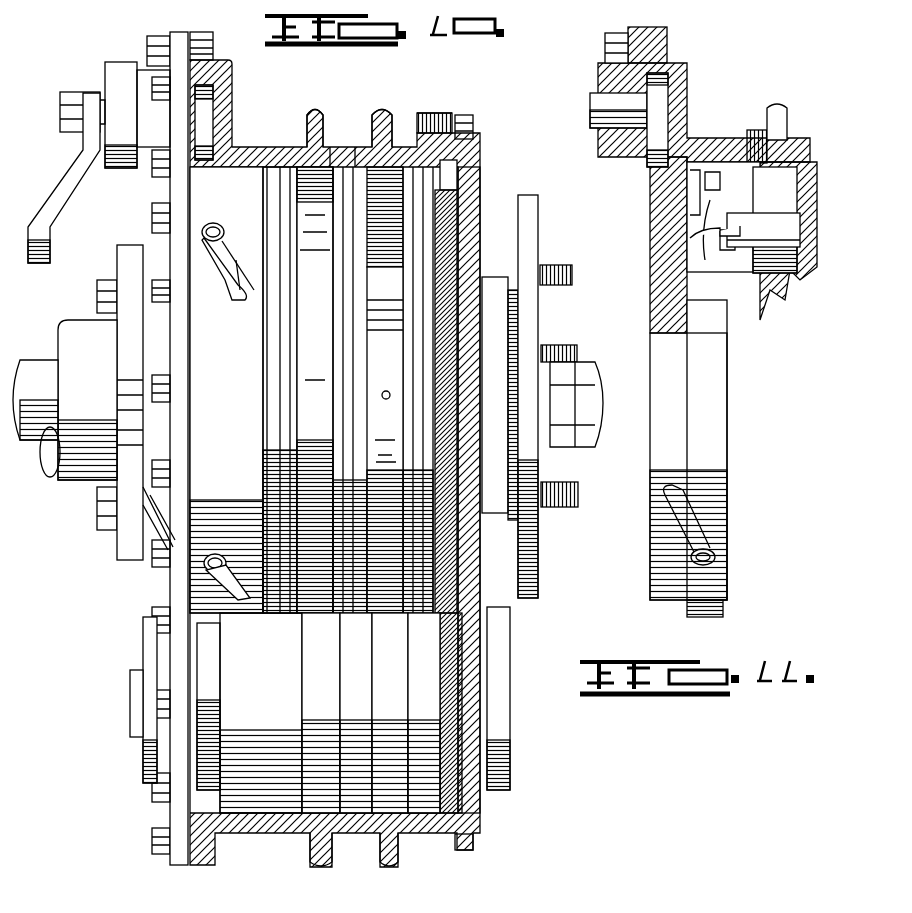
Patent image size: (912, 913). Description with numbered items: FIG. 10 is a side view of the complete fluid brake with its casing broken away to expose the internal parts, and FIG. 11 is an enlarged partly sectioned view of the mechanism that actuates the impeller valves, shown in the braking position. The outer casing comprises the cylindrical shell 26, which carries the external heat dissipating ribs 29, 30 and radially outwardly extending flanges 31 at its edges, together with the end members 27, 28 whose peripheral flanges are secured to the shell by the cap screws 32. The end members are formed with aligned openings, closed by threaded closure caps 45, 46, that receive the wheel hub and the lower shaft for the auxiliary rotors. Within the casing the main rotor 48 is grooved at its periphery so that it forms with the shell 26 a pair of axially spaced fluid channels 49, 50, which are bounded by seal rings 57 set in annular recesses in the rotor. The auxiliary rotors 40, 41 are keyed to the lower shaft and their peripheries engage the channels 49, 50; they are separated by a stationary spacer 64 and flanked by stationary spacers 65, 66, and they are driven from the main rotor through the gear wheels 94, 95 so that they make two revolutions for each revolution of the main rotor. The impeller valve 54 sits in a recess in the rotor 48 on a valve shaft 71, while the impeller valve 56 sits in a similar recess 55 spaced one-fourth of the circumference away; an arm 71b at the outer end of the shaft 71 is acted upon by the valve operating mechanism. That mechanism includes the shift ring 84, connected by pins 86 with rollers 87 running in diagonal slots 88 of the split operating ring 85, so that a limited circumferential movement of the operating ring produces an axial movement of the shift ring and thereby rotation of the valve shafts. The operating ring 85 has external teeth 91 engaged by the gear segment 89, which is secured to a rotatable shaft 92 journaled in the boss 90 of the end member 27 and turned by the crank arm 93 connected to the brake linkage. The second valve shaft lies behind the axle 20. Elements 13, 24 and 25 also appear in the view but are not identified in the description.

In FIG. 10, the hub flange 13 is at (78, 322).
In FIG. 10, the axle 20 is at (40, 362).
In FIG. 10, the pressure plate 24 is at (538, 236).
In FIG. 10, the bolt 25 is at (562, 286).
In FIG. 10, the cylindrical shell 26 is at (282, 150).
In FIG. 10, the end member 27 is at (170, 190).
In FIG. 10, the end member 28 is at (480, 178).
In FIG. 10, the heat dissipating rib 29 is at (316, 118).
In FIG. 10, the heat dissipating rib 30 is at (372, 118).
In FIG. 10, the flange 31 is at (203, 36).
In FIG. 10, the cap screw 32 is at (147, 48).
In FIG. 10, the auxiliary rotor 40 is at (320, 610).
In FIG. 10, the auxiliary rotor 41 is at (392, 610).
In FIG. 10, the closure cap 45 is at (498, 278).
In FIG. 10, the closure cap 46 is at (143, 652).
In FIG. 10, the main rotor 48 is at (345, 272).
In FIG. 10, the fluid channel 49 is at (336, 167).
In FIG. 11, the fluid channel 49 is at (787, 136).
In FIG. 10, the fluid channel 50 is at (382, 190).
In FIG. 10, the impeller valve 54 is at (312, 212).
In FIG. 11, the impeller valve 54 is at (800, 192).
In FIG. 10, the recess 55 is at (375, 310).
In FIG. 10, the impeller valve 56 is at (398, 422).
In FIG. 10, the seal ring 57 is at (282, 392).
In FIG. 10, the stationary spacer 64 is at (356, 713).
In FIG. 10, the stationary spacer 65 is at (272, 696).
In FIG. 10, the stationary spacer 66 is at (424, 713).
In FIG. 11, the valve shaft 71 is at (768, 232).
In FIG. 11, the lever arm 71b is at (705, 228).
In FIG. 10, the shift ring 84 is at (240, 295).
In FIG. 10, the operating ring 85 is at (245, 426).
In FIG. 10, the pin 86 is at (216, 228).
In FIG. 10, the roller 87 is at (233, 248).
In FIG. 10, the diagonal slot 88 is at (236, 290).
In FIG. 10, the gear segment 89 is at (213, 100).
In FIG. 10, the boss 90 is at (150, 124).
In FIG. 10, the teeth 91 is at (222, 188).
In FIG. 10, the rotatable shaft 92 is at (60, 105).
In FIG. 10, the crank arm 93 is at (60, 172).
In FIG. 10, the gear wheel 94 is at (457, 212).
In FIG. 10, the gear wheel 95 is at (460, 640).